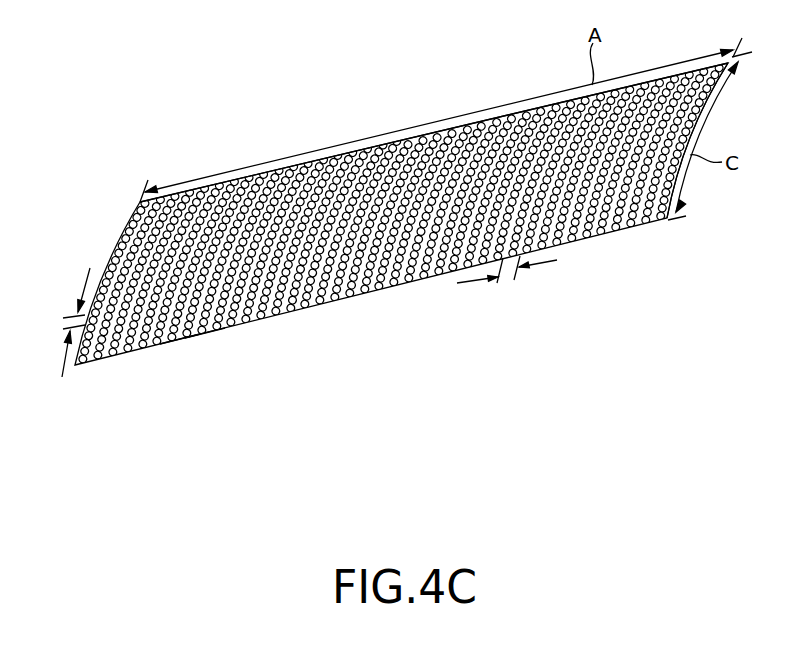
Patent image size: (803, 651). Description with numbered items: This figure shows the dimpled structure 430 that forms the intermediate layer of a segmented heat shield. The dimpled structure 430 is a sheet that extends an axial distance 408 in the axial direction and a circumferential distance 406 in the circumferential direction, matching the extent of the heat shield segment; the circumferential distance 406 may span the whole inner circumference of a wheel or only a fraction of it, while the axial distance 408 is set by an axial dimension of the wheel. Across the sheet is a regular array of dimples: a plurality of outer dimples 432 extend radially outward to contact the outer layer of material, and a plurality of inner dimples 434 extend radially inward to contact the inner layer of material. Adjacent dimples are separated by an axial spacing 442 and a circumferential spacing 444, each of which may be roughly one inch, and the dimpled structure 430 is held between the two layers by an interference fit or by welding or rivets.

The dimpled structure 430 is at (242, 93).
The axial distance 408 is at (477, 107).
The circumferential distance 406 is at (705, 113).
The axial spacing 442 is at (548, 265).
The circumferential spacing 444 is at (84, 286).
The outer dimples 432 is at (180, 338).
The inner dimples 434 is at (196, 339).